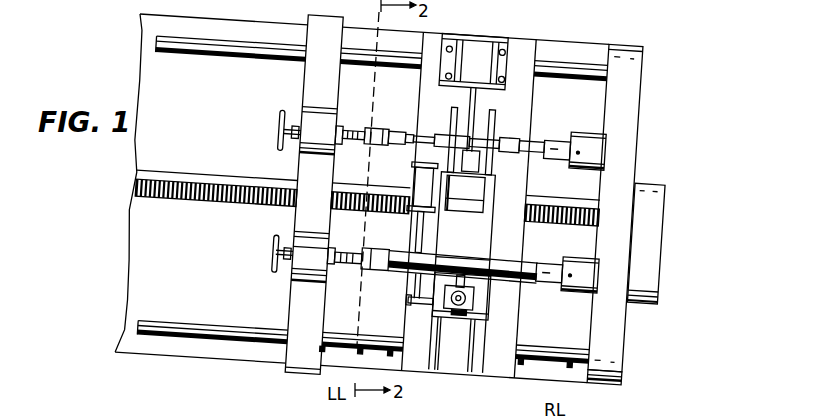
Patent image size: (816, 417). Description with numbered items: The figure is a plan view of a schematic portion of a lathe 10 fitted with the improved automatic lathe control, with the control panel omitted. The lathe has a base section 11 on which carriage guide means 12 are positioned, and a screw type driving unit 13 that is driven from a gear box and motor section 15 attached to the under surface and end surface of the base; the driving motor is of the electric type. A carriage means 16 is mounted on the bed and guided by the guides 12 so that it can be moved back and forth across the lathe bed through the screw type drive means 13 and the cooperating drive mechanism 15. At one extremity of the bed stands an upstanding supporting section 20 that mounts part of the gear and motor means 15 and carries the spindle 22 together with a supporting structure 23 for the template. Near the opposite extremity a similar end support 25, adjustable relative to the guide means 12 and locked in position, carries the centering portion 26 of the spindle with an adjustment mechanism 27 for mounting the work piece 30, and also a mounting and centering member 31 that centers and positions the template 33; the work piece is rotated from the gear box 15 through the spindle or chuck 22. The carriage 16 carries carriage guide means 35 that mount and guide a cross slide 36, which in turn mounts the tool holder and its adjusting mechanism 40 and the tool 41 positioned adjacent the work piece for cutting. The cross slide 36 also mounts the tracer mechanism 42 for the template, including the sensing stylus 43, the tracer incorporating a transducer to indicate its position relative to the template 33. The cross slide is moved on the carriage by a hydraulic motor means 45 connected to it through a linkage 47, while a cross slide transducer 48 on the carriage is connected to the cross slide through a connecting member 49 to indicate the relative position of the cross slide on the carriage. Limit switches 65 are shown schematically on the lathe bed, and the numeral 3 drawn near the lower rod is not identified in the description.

The lower feed rod 3 is at (442, 272).
The lathe 10 is at (691, 128).
The base section 11 is at (599, 48).
The carriage guide means 12 is at (547, 58).
The screw type driving unit 13 is at (206, 198).
The gear box and motor section 15 is at (653, 182).
The carriage means 16 is at (499, 369).
The upstanding supporting section 20 is at (621, 372).
The spindle 22 is at (579, 285).
The supporting structure 23 is at (581, 134).
The end support 25 is at (287, 369).
The centering portion 26 is at (303, 250).
The adjustment mechanism 27 is at (267, 265).
The work piece 30 is at (373, 261).
The mounting and centering member 31 is at (331, 125).
The template 33 is at (372, 143).
The carriage guide means 35 is at (472, 368).
The cross slide 36 is at (477, 229).
The tool holder and adjusting mechanism 40 is at (473, 307).
The tool 41 is at (466, 281).
The tracer mechanism 42 is at (493, 181).
The sensing stylus 43 is at (470, 157).
The motor means 45 is at (464, 60).
The linkage 47 is at (481, 108).
The cross slide transducer 48 is at (424, 180).
The connecting member 49 is at (417, 300).
The limit switches 65 is at (388, 357).